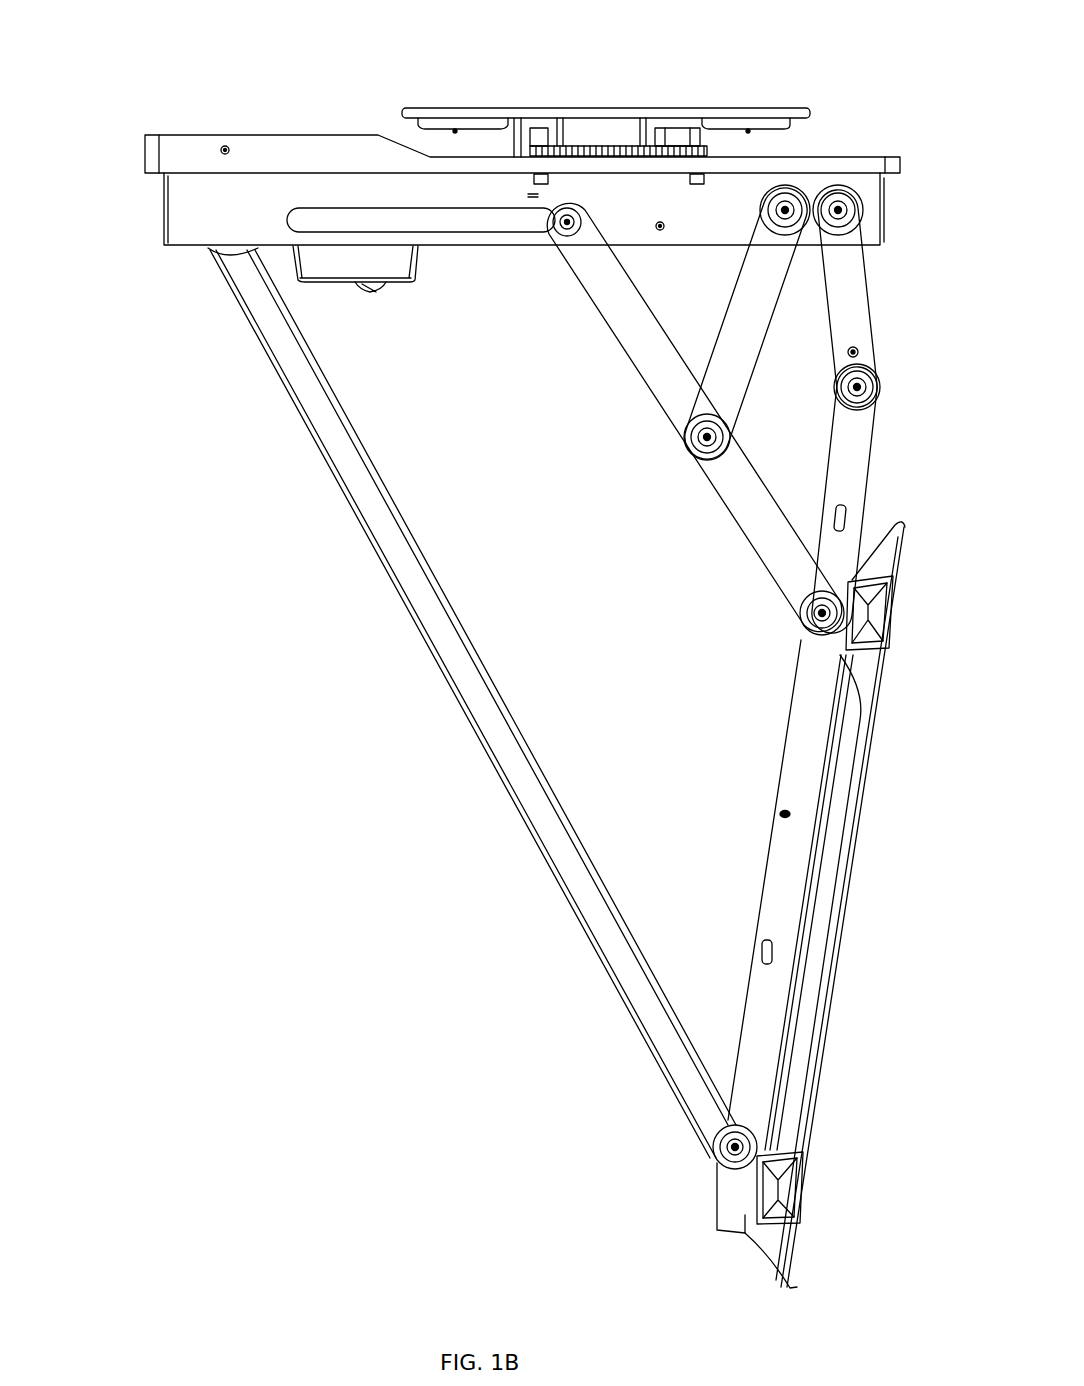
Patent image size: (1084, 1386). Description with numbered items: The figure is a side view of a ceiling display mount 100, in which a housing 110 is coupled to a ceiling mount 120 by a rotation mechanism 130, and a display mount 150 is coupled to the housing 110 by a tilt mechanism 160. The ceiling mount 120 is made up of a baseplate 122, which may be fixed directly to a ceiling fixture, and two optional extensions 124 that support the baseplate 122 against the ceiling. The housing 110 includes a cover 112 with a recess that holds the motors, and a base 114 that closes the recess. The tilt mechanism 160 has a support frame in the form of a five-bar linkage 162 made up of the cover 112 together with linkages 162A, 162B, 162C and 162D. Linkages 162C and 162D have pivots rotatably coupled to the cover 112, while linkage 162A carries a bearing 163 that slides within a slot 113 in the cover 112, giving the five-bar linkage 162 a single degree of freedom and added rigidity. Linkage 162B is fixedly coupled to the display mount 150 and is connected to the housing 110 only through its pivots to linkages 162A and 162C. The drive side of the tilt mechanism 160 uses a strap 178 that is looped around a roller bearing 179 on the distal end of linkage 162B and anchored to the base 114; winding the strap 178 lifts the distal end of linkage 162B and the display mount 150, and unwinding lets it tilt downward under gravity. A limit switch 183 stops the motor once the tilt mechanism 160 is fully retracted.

The ceiling display mount 100 is at (104, 78).
The housing 110 is at (472, 195).
The cover 112 is at (250, 217).
The slots 113 is at (493, 222).
The base 114 is at (318, 145).
The ceiling mount 120 is at (583, 106).
The baseplate 122 is at (618, 123).
The extensions 124 is at (432, 120).
The rotation mechanism 130 is at (752, 146).
The display mount 150 is at (875, 770).
The tilt mechanism 160 is at (585, 685).
The five-bar linkage 162 is at (723, 410).
The linkage 162A is at (655, 370).
The linkage 162B is at (858, 488).
The linkage 162C is at (858, 336).
The linkage 162D is at (740, 340).
The bearing 163 is at (578, 220).
The strap 178 is at (420, 624).
The roller bearing 179 is at (722, 1156).
The limit switch 183 is at (372, 290).